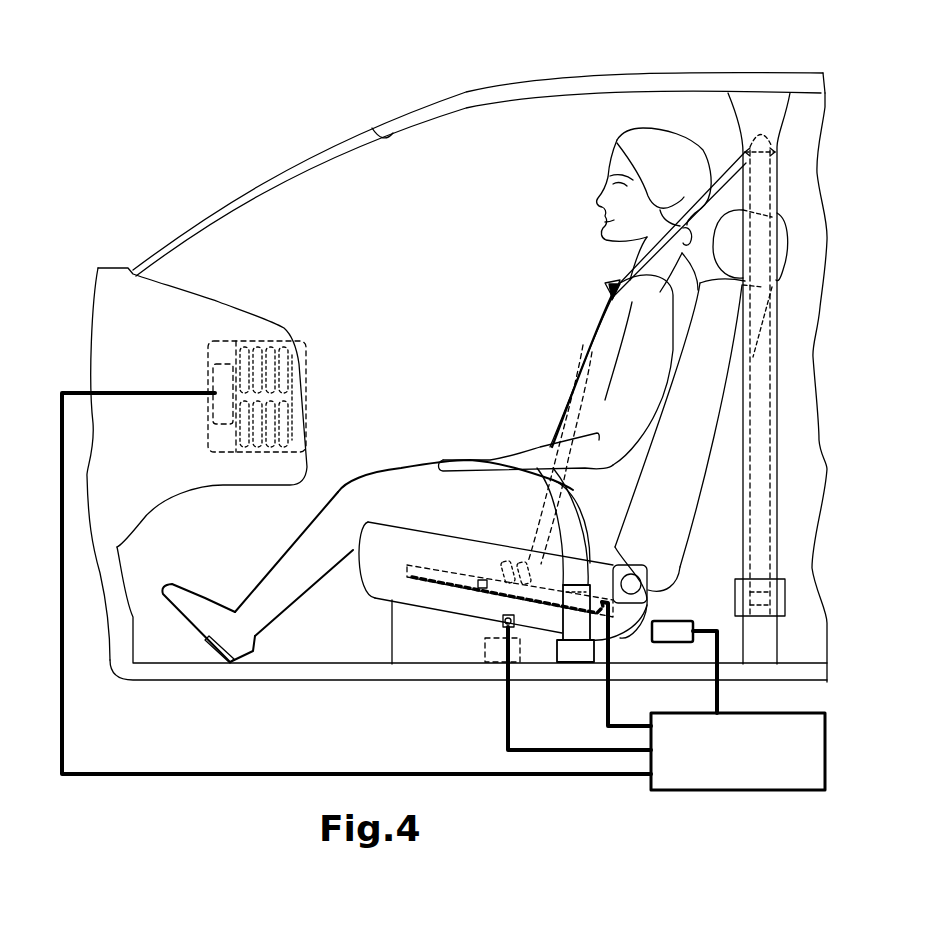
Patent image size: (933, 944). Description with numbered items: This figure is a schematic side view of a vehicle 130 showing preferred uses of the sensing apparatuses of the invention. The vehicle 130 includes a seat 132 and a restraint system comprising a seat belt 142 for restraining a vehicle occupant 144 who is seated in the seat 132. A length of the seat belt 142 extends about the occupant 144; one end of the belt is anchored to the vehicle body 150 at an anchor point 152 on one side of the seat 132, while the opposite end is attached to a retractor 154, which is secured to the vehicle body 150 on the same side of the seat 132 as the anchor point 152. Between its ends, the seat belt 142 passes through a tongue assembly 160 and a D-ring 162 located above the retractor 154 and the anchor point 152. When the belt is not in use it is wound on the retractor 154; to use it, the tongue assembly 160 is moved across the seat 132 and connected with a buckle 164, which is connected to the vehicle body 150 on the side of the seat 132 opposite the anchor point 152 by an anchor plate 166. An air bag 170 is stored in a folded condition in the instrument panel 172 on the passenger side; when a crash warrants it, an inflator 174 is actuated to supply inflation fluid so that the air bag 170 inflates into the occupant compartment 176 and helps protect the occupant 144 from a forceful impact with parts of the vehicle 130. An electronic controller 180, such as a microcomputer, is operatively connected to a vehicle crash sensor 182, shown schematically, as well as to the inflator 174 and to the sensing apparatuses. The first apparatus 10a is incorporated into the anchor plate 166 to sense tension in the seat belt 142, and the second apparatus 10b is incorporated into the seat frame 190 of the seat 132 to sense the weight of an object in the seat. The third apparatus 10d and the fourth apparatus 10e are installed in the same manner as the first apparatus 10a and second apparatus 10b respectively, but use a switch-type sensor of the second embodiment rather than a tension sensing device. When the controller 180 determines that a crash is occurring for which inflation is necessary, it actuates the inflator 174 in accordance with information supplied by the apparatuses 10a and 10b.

The vehicle 130 is at (718, 66).
The seat 132 is at (710, 368).
The seat belt 142 is at (761, 429).
The vehicle occupant 144 is at (656, 160).
The vehicle body 150 is at (291, 680).
The anchor point 152 is at (574, 649).
The retractor 154 is at (770, 600).
The tongue assembly 160 is at (508, 615).
The D-ring 162 is at (773, 140).
The buckle 164 is at (487, 640).
The anchor plate 166 is at (505, 625).
The air bag 170 is at (295, 355).
The instrument panel 172 is at (237, 324).
The inflator 174 is at (220, 383).
The occupant compartment 176 is at (443, 193).
The electronic controller 180 is at (733, 777).
The vehicle crash sensor 182 is at (671, 638).
The seat frame 190 is at (407, 570).
The first apparatus 10a is at (536, 722).
The third apparatus 10d is at (511, 632).
The second apparatus 10b is at (433, 511).
The fourth apparatus 10e is at (480, 580).